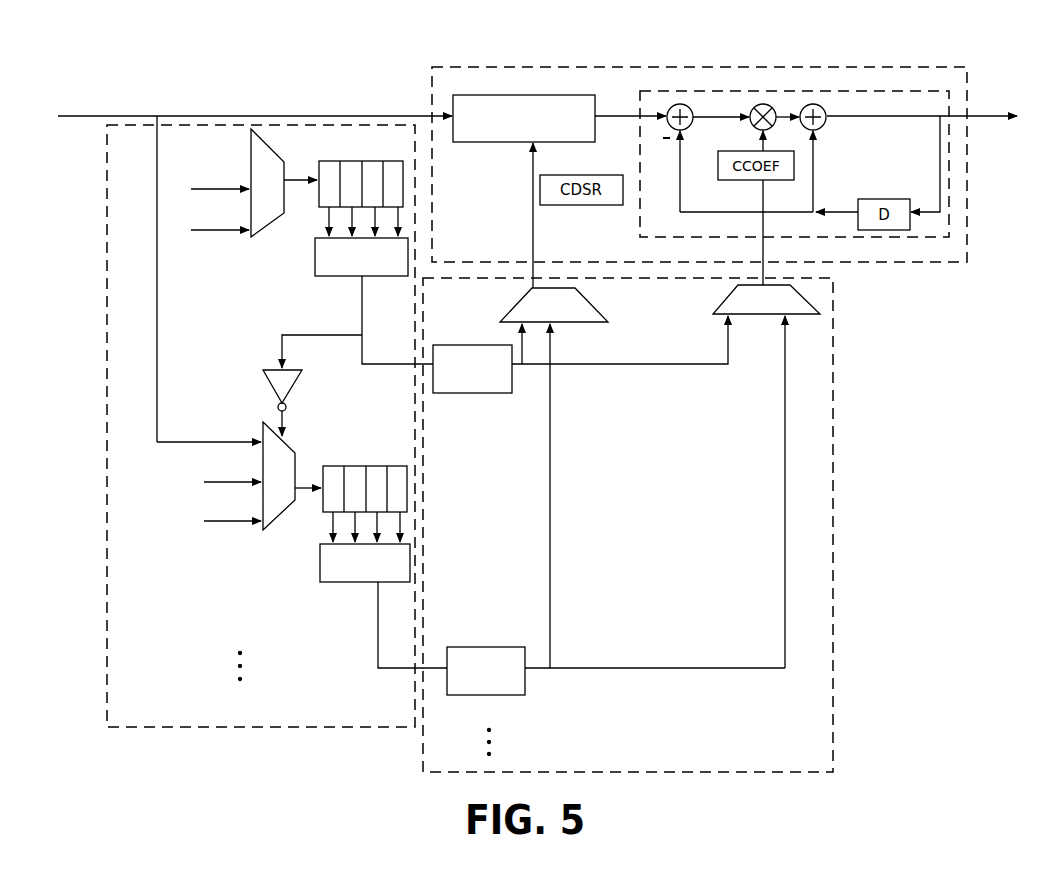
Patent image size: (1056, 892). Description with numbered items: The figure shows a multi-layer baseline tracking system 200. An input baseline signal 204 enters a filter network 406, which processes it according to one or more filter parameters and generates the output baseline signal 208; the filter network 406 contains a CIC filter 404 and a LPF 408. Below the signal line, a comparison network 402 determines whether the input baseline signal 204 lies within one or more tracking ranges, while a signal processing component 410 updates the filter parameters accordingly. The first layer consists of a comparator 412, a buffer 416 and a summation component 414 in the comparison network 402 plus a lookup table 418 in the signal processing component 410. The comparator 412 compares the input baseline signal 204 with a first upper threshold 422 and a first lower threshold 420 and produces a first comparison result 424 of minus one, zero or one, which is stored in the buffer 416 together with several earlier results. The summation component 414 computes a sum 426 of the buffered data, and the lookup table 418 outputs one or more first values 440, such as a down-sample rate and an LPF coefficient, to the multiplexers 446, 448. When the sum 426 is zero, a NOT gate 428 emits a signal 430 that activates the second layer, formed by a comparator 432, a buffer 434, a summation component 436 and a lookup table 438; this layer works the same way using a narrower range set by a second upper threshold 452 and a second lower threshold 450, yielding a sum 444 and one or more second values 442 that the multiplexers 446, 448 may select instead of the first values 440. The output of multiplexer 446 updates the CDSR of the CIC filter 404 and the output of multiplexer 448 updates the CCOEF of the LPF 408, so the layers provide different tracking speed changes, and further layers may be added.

The baseline tracking system 200 is at (78, 68).
The input baseline signal 204 is at (333, 115).
The output baseline signal 208 is at (990, 120).
The comparison network 402 is at (106, 427).
The CIC filter 404 is at (503, 143).
The filter network 406 is at (700, 66).
The LPF 408 is at (795, 90).
The signal processing component 410 is at (833, 527).
The comparator 412 is at (267, 223).
The summation component 414 is at (317, 275).
The buffer 416 is at (350, 160).
The lookup table 418 is at (480, 395).
The first lower threshold 420 is at (220, 230).
The first upper threshold 422 is at (191, 189).
The first comparison result 424 is at (299, 181).
The sum 426 is at (365, 307).
The NOT gate 428 is at (277, 392).
The signal 430 is at (290, 417).
The comparator 432 is at (282, 520).
The buffer 434 is at (358, 466).
The summation component 436 is at (348, 583).
The lookup table 438 is at (490, 647).
The first values 440 is at (520, 345).
The second values 442 is at (553, 537).
The sum 444 is at (377, 650).
The multiplexer 446 is at (600, 318).
The multiplexer 448 is at (757, 318).
The second lower threshold 450 is at (222, 522).
The second upper threshold 452 is at (204, 482).